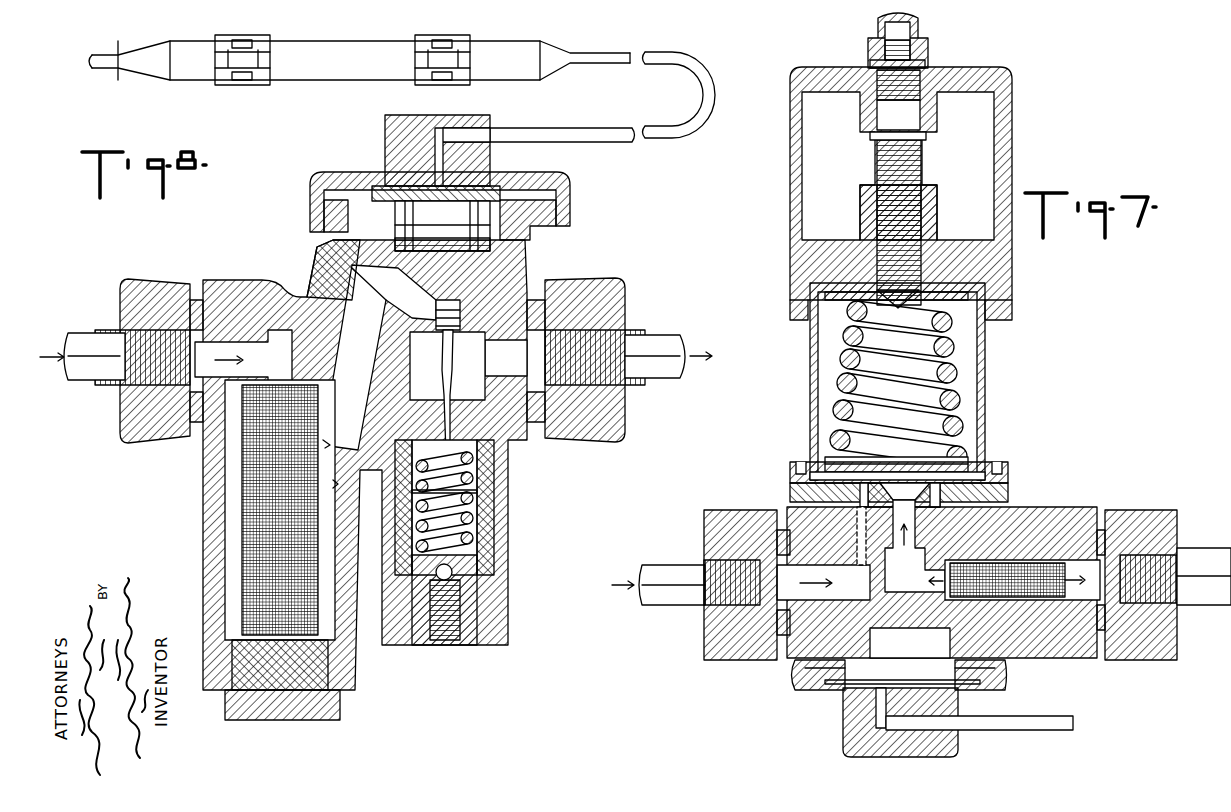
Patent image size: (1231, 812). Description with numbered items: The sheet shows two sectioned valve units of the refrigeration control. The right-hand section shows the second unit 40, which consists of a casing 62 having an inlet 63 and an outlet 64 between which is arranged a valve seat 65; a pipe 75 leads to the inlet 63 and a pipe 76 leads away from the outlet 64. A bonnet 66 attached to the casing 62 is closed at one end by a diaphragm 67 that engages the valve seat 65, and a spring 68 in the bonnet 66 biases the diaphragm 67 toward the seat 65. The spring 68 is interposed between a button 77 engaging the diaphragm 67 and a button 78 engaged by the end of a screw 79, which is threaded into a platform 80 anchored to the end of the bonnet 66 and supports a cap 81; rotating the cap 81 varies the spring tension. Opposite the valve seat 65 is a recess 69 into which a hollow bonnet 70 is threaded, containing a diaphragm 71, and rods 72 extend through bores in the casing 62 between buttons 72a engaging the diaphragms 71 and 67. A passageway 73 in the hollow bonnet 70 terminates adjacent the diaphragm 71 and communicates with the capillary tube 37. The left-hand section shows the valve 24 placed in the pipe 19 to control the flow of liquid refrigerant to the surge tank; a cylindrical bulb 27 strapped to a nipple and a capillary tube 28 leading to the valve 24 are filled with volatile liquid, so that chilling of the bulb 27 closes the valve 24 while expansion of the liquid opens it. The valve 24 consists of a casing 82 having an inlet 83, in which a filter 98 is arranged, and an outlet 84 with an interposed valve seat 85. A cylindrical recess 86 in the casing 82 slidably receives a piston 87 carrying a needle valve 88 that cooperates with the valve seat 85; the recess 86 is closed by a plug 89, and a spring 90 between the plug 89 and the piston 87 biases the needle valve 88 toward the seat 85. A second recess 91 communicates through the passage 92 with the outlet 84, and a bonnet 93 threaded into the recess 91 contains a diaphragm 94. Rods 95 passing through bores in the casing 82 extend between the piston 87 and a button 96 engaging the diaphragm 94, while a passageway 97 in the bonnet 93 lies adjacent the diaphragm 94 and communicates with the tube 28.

In FIG. 8, the pipe 19 is at (95, 370).
In FIG. 8, the valve 24 is at (203, 548).
In FIG. 8, the cylindrical bulb 27 is at (358, 56).
In FIG. 8, the capillary tube 28 is at (676, 56).
In FIG. 7, the capillary tube 37 is at (990, 716).
In FIG. 7, the second unit 40 is at (1002, 340).
In FIG. 7, the casing 62 is at (1025, 506).
In FIG. 7, the inlet 63 is at (1045, 622).
In FIG. 7, the outlet 64 is at (750, 635).
In FIG. 7, the valve seat 65 is at (1012, 480).
In FIG. 7, the bonnet 66 is at (988, 370).
In FIG. 7, the diaphragm 67 is at (795, 485).
In FIG. 7, the spring 68 is at (838, 382).
In FIG. 7, the recess 69 is at (790, 662).
In FIG. 7, the hollow bonnet 70 is at (830, 684).
In FIG. 7, the diaphragm 71 is at (860, 690).
In FIG. 7, the rods 72 is at (935, 634).
In FIG. 7, the buttons 72a is at (845, 492).
In FIG. 7, the passageway 73 is at (845, 736).
In FIG. 7, the pipe 75 is at (1222, 598).
In FIG. 7, the pipe 76 is at (672, 592).
In FIG. 7, the button 77 is at (935, 455).
In FIG. 7, the button 78 is at (848, 300).
In FIG. 7, the screw 79 is at (920, 166).
In FIG. 7, the platform 80 is at (960, 255).
In FIG. 7, the cap 81 is at (1011, 122).
In FIG. 8, the casing 82 is at (478, 488).
In FIG. 8, the inlet 83 is at (215, 320).
In FIG. 8, the outlet 84 is at (615, 290).
In FIG. 8, the valve seat 85 is at (530, 296).
In FIG. 8, the cylindrical recess 86 is at (490, 465).
In FIG. 8, the piston 87 is at (482, 440).
In FIG. 8, the needle valve 88 is at (445, 392).
In FIG. 8, the plug 89 is at (495, 556).
In FIG. 8, the spring 90 is at (478, 509).
In FIG. 8, the second recess 91 is at (520, 232).
In FIG. 8, the passage 92 is at (520, 262).
In FIG. 8, the bonnet 93 is at (556, 192).
In FIG. 8, the diaphragm 94 is at (380, 180).
In FIG. 8, the rods 95 is at (330, 242).
In FIG. 8, the button 96 is at (492, 186).
In FIG. 8, the passageway 97 is at (430, 135).
In FIG. 8, the filter 98 is at (270, 500).